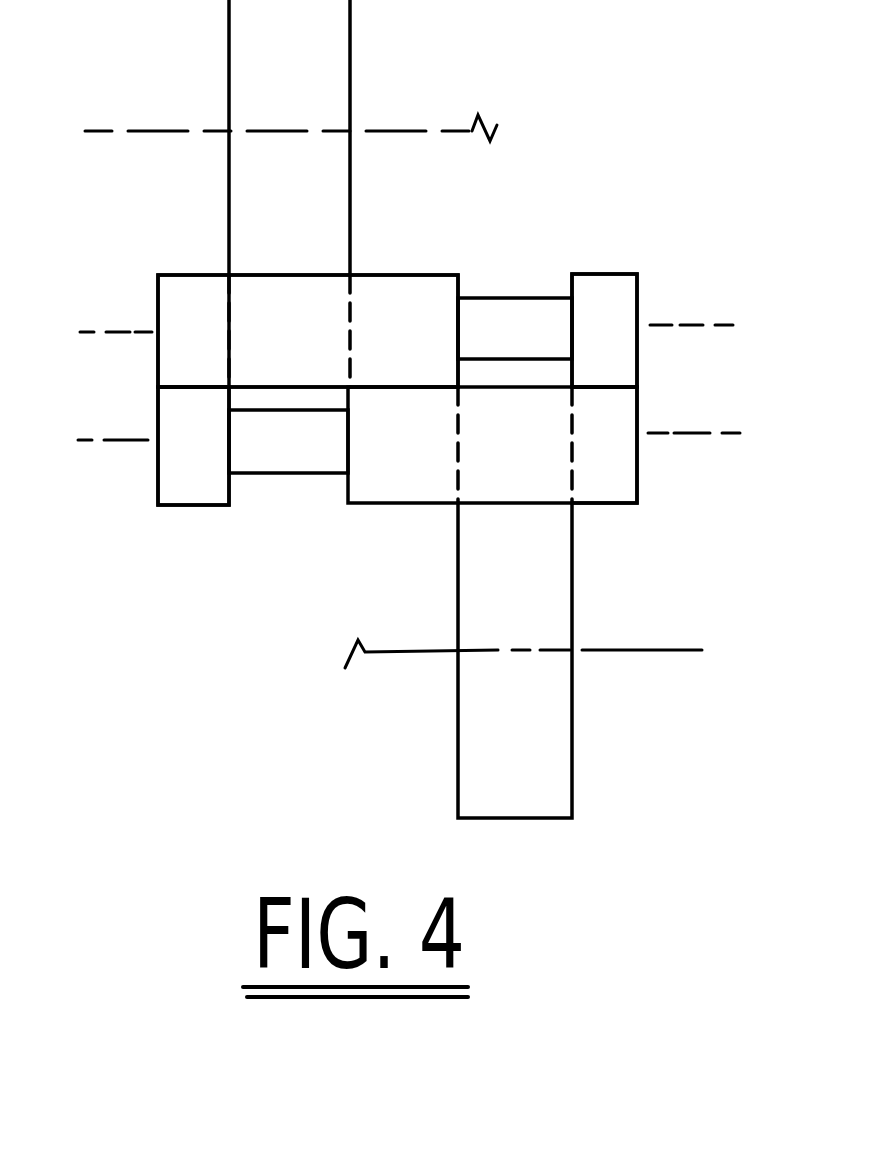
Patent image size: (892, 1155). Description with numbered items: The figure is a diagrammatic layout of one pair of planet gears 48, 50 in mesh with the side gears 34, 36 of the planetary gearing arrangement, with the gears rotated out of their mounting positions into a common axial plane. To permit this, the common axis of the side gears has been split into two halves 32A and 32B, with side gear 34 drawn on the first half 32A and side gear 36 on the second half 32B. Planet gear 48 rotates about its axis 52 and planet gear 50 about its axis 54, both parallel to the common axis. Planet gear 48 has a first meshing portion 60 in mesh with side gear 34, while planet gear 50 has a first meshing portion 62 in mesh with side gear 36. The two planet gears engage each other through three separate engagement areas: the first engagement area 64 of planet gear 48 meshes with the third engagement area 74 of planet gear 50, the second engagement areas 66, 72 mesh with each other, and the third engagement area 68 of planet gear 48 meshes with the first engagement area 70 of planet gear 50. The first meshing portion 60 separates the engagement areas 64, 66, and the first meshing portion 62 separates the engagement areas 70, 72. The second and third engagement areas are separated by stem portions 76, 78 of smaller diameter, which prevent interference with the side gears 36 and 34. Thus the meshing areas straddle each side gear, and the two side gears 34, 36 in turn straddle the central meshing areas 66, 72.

The first half of common axis 32A is at (147, 131).
The second half of common axis 32B is at (606, 650).
The side gear 34 is at (312, 75).
The side gear 36 is at (530, 760).
The planet gear 48 is at (156, 304).
The planet gear 50 is at (156, 464).
The planet gear axis 52 is at (680, 328).
The planet gear axis 54 is at (682, 433).
The first meshing portion 60 is at (315, 360).
The first meshing portion 62 is at (522, 465).
The first engagement area 64 is at (215, 360).
The second engagement area 66 is at (428, 360).
The third engagement area 68 is at (628, 353).
The first engagement area 70 is at (620, 465).
The second engagement area 72 is at (422, 465).
The third engagement area 74 is at (205, 468).
The stem portion 76 is at (525, 353).
The stem portion 78 is at (300, 468).